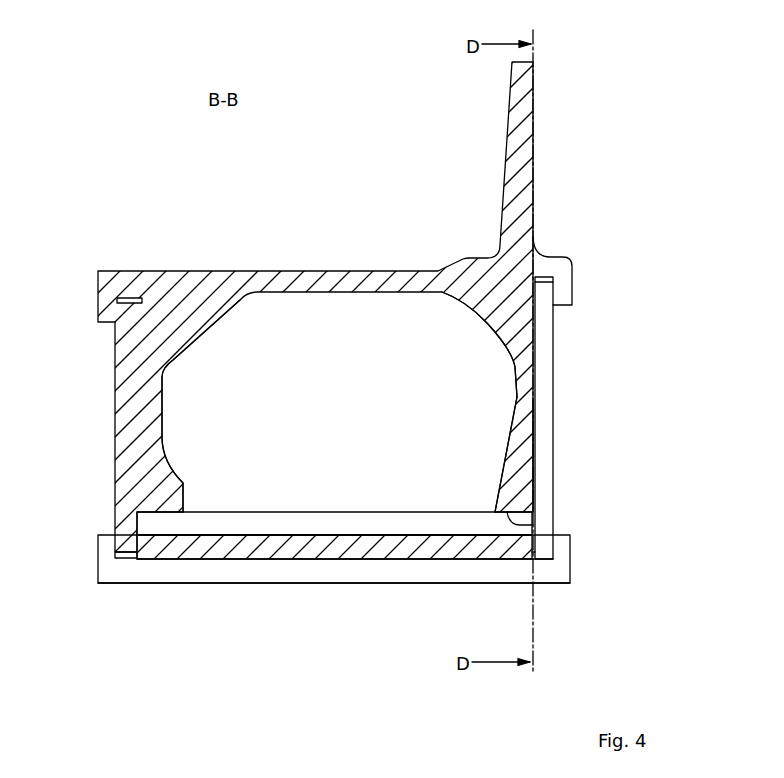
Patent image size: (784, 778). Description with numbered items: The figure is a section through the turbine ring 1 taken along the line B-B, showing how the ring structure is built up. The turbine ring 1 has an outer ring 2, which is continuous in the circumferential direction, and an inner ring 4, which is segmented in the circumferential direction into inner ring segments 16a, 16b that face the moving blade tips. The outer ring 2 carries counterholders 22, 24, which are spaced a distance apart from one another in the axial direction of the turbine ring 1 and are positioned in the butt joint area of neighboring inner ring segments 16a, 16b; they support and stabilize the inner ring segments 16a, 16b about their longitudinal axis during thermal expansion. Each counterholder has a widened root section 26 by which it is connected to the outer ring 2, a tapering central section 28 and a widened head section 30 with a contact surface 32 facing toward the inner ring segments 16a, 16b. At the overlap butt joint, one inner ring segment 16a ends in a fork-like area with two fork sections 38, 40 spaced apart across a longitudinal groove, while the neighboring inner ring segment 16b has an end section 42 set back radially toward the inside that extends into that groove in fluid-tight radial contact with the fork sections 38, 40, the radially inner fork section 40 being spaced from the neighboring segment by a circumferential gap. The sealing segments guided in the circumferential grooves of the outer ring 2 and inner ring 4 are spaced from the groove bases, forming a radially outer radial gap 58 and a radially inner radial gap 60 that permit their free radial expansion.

The turbine ring 1 is at (36, 51).
The outer ring 2 is at (561, 250).
The inner ring 4 is at (571, 572).
The inner ring segment 16a is at (352, 584).
The inner ring segment 16b is at (408, 560).
The counterholder 22 is at (167, 393).
The counterholder 24 is at (515, 395).
The widened root section 26 is at (520, 317).
The tapering central section 28 is at (513, 405).
The widened head section 30 is at (510, 478).
The contact surface 32 is at (520, 525).
The fork section 38 is at (265, 522).
The radially inner fork section 40 is at (277, 573).
The end section 42 is at (325, 550).
The radially outer radial gap 58 is at (135, 298).
The radially inner radial gap 60 is at (127, 555).